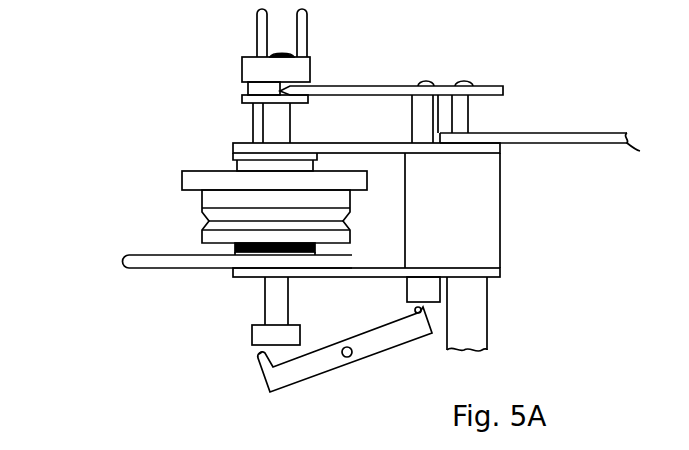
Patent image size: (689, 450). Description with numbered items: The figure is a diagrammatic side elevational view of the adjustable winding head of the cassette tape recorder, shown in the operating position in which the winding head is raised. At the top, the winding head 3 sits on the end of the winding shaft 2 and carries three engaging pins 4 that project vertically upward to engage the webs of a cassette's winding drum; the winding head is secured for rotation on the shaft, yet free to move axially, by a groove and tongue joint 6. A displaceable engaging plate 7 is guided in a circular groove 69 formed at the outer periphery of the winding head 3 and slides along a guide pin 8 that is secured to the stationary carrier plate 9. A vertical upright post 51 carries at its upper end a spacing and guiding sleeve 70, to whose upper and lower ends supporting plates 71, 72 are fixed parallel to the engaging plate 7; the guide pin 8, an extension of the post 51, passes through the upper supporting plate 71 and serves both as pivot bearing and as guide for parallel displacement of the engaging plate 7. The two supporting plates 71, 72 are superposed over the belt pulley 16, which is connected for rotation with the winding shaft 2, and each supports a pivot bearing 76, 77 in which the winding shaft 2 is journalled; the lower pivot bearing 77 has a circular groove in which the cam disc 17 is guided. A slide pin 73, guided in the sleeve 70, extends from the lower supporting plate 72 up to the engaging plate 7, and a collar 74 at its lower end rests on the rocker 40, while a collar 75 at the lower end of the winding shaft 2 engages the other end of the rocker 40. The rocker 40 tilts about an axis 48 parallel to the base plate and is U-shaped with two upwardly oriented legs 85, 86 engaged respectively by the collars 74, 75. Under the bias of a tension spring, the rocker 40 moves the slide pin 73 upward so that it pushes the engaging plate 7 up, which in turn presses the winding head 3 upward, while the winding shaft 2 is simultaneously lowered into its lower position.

The winding shaft 2 is at (272, 300).
The winding head 3 is at (250, 65).
The engaging pins 4 is at (258, 28).
The groove and tongue joint 6 is at (262, 120).
The engaging plate 7 is at (350, 90).
The guide pin 8 is at (465, 120).
The carrier plate 9 is at (600, 145).
The belt pulley 16 is at (204, 206).
The cam disc 17 is at (132, 262).
The rocker 40 is at (318, 372).
The axis 48 is at (350, 357).
The post 51 is at (478, 340).
The circular groove 69 is at (248, 90).
The spacing and guiding sleeve 70 is at (500, 212).
The upper supporting plate 71 is at (500, 152).
The lower supporting plate 72 is at (500, 276).
The slide pin 73 is at (420, 118).
The collar 74 is at (418, 292).
The collar 75 is at (262, 338).
The upper pivot bearing 76 is at (237, 162).
The lower pivot bearing 77 is at (235, 250).
The leg 85 is at (412, 306).
The leg 86 is at (258, 356).